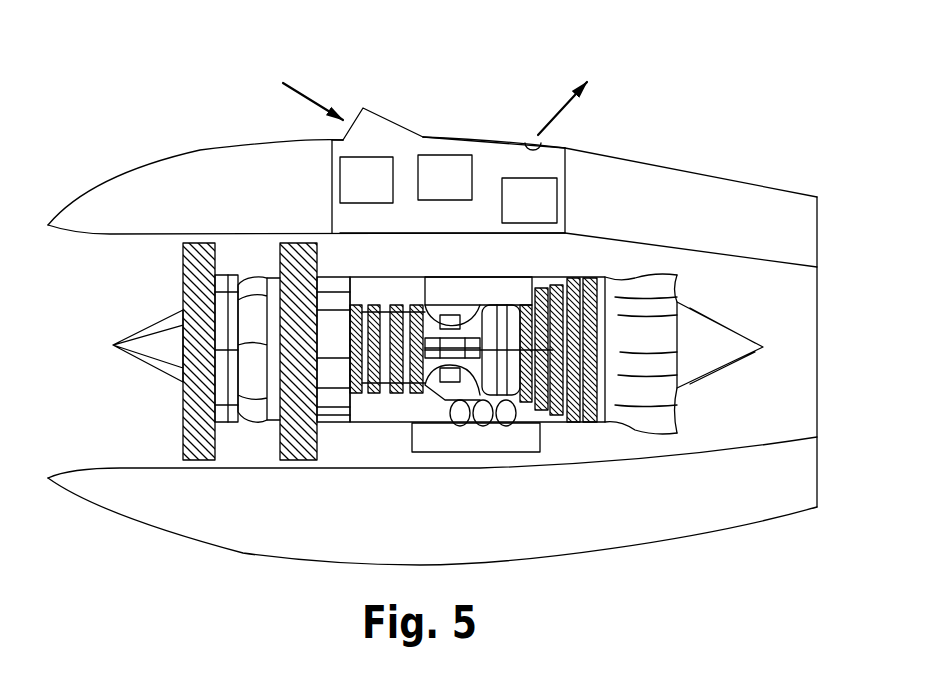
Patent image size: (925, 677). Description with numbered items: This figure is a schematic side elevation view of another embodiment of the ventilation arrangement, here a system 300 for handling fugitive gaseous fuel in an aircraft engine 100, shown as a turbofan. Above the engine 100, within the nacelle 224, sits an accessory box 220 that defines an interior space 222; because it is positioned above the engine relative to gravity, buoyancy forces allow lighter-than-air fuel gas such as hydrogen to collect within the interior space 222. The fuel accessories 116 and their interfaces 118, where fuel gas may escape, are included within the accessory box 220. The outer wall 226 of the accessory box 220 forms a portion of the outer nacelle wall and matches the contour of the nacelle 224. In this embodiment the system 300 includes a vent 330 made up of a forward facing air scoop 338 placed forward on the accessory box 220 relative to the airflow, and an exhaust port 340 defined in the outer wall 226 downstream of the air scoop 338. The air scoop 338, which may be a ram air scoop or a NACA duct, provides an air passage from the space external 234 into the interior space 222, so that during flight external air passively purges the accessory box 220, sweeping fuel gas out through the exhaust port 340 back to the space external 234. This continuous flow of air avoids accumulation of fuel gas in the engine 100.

The engine 100 is at (115, 330).
The fuel accessory 116 is at (448, 213).
The interface 118 is at (377, 193).
The accessory box 220 is at (327, 165).
The interior space 222 is at (565, 197).
The nacelle 224 is at (148, 177).
The outer wall 226 is at (440, 137).
The space external 234 is at (500, 45).
The system 300 is at (357, 80).
The vent 330 is at (562, 135).
The forward facing air scoop 338 is at (383, 117).
The exhaust port 340 is at (533, 142).